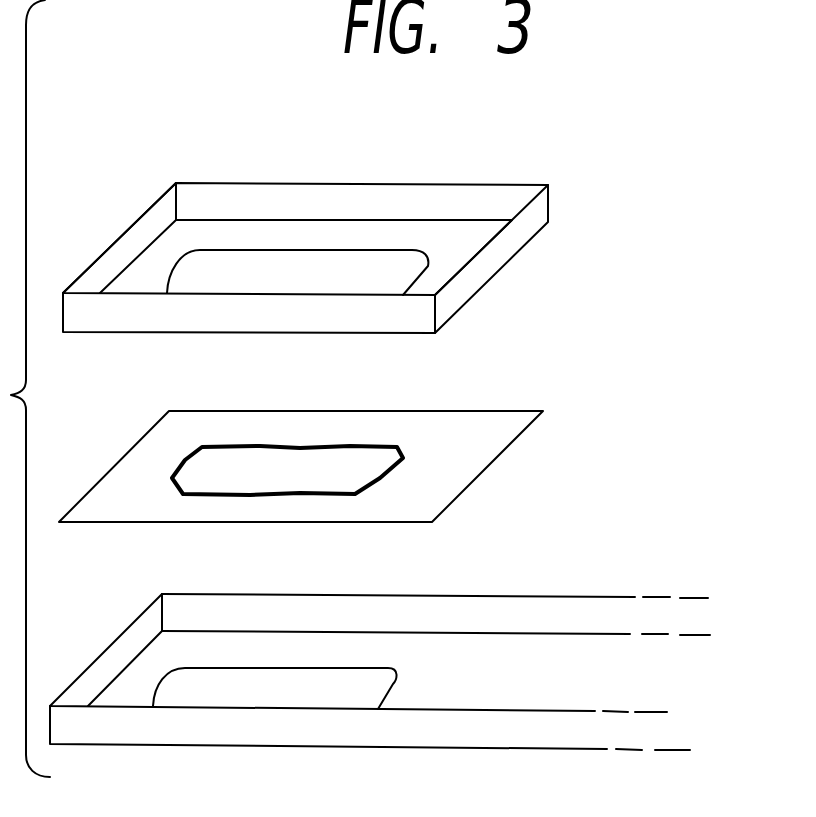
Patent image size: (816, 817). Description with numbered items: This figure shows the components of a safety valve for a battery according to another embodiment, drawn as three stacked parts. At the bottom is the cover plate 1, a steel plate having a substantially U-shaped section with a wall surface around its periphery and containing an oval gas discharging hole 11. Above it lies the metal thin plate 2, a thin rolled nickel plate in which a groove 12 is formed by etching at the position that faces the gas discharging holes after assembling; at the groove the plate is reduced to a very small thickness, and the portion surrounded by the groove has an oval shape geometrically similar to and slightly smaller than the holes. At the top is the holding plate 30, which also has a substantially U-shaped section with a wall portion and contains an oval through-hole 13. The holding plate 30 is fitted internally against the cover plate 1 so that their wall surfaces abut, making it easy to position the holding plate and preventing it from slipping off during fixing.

The cover plate 1 is at (380, 644).
The metal thin plate 2 is at (301, 435).
The gas discharging hole 11 is at (300, 687).
The groove 12 is at (345, 447).
The through-hole 13 is at (297, 272).
The holding plate 30 is at (250, 263).